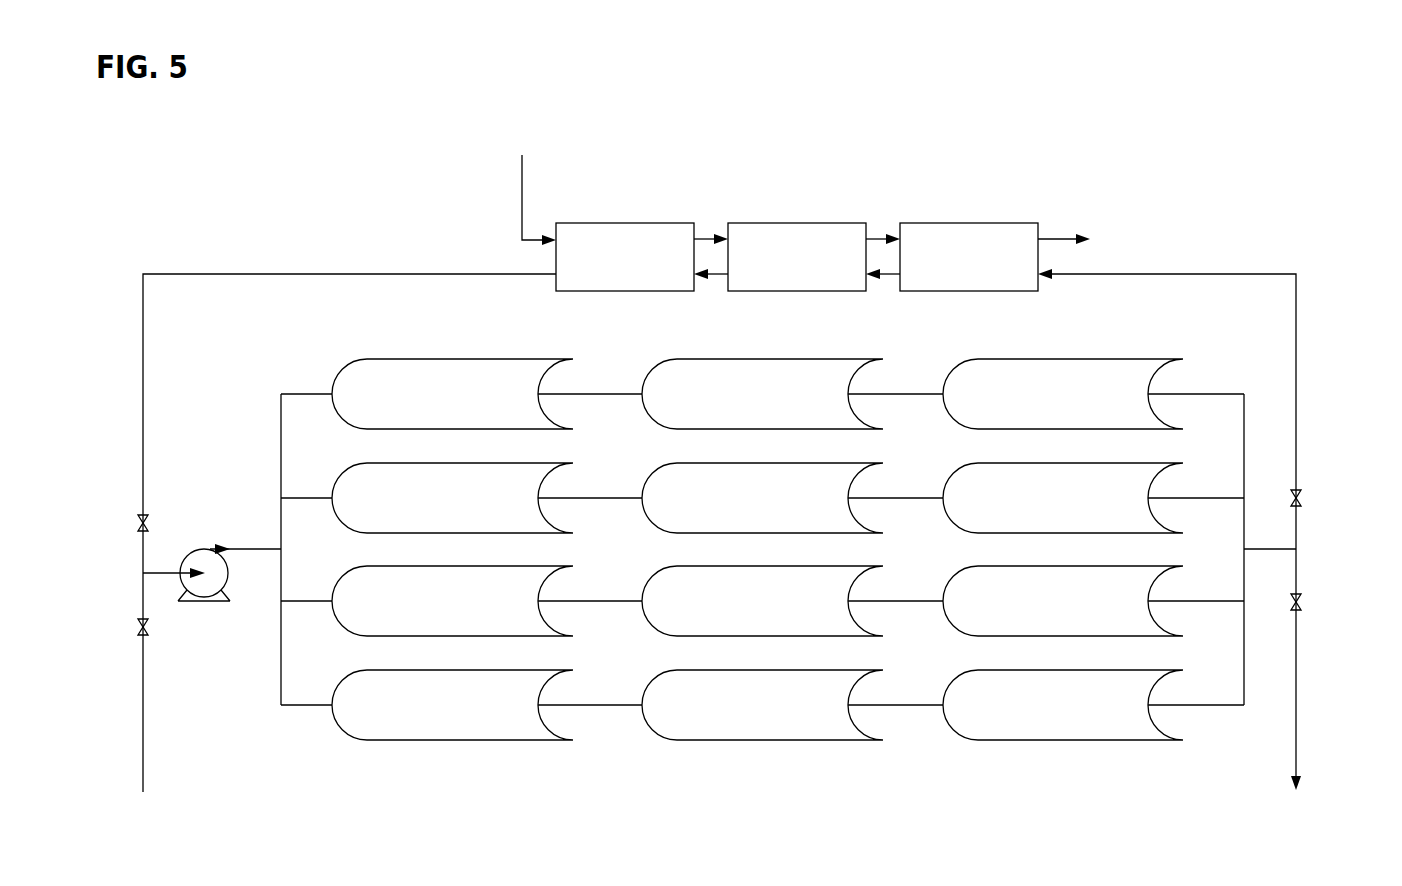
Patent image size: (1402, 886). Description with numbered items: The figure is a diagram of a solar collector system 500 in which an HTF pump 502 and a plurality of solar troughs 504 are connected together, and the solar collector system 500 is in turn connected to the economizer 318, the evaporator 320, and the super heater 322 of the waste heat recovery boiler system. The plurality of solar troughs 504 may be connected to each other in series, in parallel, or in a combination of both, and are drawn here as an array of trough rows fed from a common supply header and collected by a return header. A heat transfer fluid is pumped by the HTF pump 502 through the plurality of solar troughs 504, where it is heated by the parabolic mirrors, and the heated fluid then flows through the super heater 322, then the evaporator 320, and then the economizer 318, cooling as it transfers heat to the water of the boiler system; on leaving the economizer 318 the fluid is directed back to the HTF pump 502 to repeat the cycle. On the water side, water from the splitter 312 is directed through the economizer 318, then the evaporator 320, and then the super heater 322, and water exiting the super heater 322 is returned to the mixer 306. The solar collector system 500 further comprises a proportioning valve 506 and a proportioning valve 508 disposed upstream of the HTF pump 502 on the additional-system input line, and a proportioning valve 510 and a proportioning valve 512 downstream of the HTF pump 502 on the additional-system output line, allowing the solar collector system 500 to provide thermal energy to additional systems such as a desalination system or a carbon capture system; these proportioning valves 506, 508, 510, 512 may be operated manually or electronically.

The solar collector system 500 is at (1278, 112).
The HTF pump 502 is at (210, 603).
The plurality of solar troughs 504 is at (762, 591).
The proportioning valve 506 is at (143, 519).
The proportioning valve 508 is at (143, 623).
The proportioning valve 510 is at (1300, 499).
The proportioning valve 512 is at (1300, 603).
The economizer 318 is at (678, 223).
The evaporator 320 is at (828, 223).
The super heater 322 is at (969, 223).
The splitter 312 is at (527, 187).
The mixer 306 is at (1101, 240).